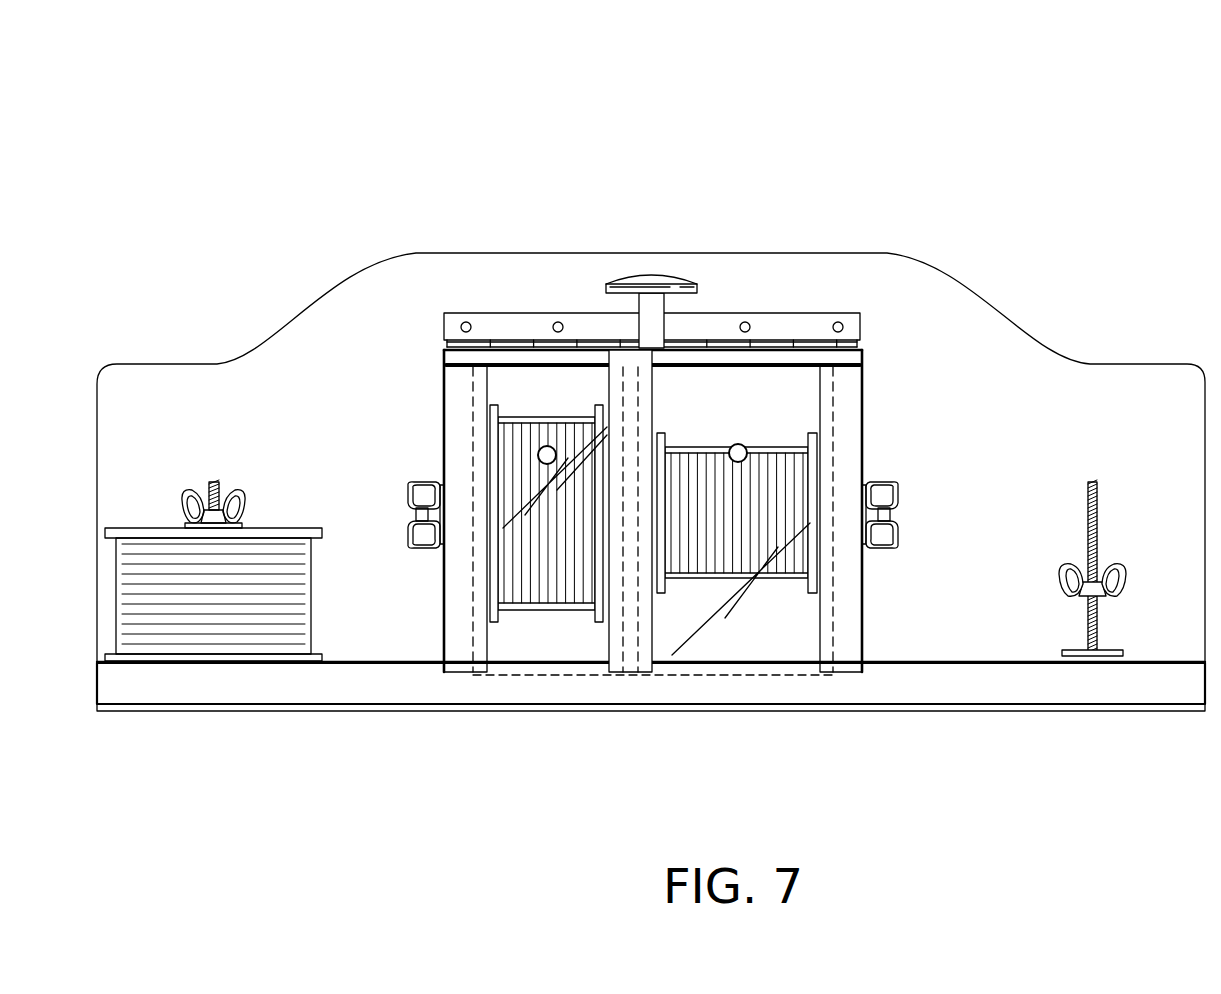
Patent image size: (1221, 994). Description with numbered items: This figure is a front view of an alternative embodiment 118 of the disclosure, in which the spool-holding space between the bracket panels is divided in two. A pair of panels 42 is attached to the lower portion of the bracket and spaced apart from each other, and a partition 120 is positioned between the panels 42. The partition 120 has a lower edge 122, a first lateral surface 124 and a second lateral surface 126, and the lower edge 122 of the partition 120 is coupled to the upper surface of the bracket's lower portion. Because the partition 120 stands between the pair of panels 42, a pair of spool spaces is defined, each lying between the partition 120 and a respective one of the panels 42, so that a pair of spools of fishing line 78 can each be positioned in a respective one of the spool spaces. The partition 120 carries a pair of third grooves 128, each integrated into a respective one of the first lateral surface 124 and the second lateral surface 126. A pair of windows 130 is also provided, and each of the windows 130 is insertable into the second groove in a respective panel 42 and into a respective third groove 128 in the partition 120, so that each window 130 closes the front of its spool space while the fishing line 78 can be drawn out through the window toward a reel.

The panels 42 is at (444, 400).
The fishing line 78 is at (490, 622).
The alternative embodiment 118 is at (813, 140).
The partition 120 is at (609, 388).
The lower edge 122 is at (630, 672).
The first lateral surface 124 is at (610, 638).
The second lateral surface 126 is at (652, 637).
The third grooves 128 is at (620, 370).
The windows 130 is at (516, 375).